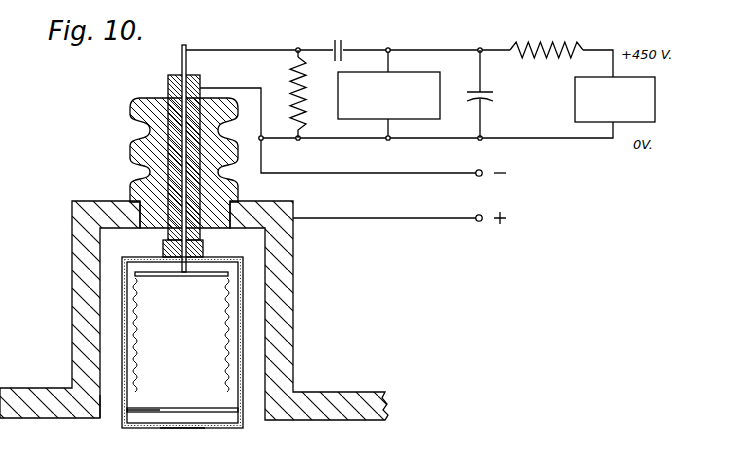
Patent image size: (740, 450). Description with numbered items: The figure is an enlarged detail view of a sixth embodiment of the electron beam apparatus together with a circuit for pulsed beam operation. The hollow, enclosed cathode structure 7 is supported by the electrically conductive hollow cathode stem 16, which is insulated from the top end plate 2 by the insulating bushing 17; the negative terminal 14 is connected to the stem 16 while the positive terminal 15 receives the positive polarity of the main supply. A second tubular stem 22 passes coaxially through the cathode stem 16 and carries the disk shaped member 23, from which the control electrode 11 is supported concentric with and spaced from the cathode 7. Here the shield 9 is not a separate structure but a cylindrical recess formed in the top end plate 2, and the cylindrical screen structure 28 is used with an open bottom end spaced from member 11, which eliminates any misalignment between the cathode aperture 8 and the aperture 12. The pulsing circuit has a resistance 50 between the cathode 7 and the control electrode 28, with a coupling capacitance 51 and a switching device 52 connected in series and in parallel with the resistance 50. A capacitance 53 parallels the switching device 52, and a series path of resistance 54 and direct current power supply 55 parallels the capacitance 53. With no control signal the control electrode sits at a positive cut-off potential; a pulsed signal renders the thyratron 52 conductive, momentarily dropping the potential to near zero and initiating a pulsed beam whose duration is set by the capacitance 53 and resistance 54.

The top end plate 2 is at (34, 389).
The cathode structure 7 is at (244, 300).
The aperture 8 is at (182, 429).
The shield 9 is at (100, 400).
The control electrode 11 is at (147, 408).
The aperture 12 is at (184, 408).
The negative terminal 14 is at (475, 177).
The positive terminal 15 is at (475, 222).
The cathode stem 16 is at (168, 85).
The insulating bushing 17 is at (131, 108).
The stem 22 is at (181, 60).
The disk shaped member 23 is at (193, 277).
The cylindrical screen structure 28 is at (226, 318).
The resistance 50 is at (290, 79).
The coupling capacitance 51 is at (350, 27).
The switching device 52 is at (441, 89).
The capacitance 53 is at (485, 92).
The resistance 54 is at (566, 46).
The direct current power supply 55 is at (655, 100).